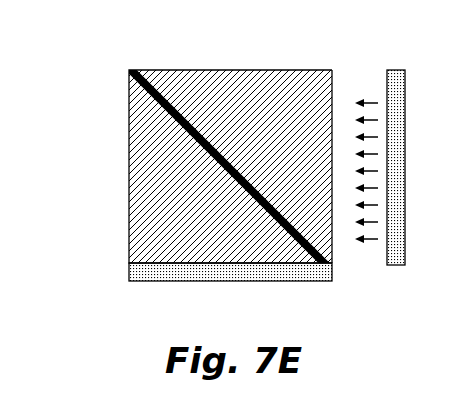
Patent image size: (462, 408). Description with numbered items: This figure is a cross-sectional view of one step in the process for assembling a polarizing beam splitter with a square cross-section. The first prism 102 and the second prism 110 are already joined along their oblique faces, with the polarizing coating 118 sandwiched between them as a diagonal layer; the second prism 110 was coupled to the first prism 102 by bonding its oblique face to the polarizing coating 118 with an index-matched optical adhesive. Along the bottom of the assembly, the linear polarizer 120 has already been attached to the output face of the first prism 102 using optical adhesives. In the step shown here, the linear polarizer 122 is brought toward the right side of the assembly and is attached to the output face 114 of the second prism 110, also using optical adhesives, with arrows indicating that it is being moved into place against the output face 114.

The first prism 102 is at (180, 238).
The second prism 110 is at (290, 94).
The output face 114 is at (332, 83).
The polarizing coating 118 is at (163, 89).
The linear polarizer 120 is at (129, 275).
The linear polarizer 122 is at (393, 80).